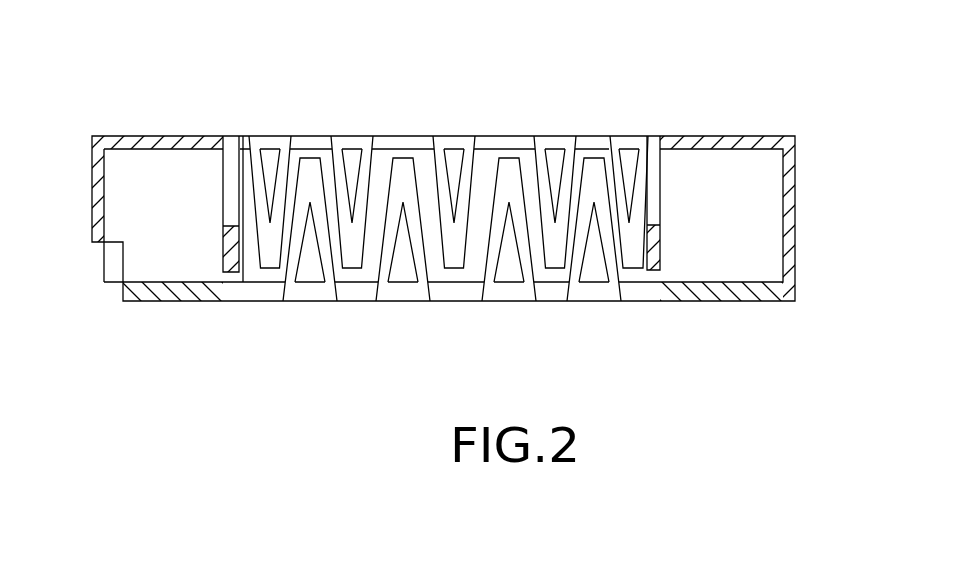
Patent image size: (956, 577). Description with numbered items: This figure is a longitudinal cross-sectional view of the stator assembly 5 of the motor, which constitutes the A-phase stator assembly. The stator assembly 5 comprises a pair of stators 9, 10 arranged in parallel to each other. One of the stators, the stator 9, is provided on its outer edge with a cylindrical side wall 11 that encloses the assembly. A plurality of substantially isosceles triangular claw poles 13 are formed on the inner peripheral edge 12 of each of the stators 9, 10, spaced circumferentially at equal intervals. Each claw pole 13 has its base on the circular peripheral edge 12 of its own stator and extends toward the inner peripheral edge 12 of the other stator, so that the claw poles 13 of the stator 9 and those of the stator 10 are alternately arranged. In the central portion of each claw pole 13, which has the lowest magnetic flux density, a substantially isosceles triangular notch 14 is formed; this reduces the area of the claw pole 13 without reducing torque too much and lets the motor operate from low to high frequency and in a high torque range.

The stator assembly 5 is at (715, 118).
The stator 9 is at (527, 140).
The stator 10 is at (357, 290).
The cylindrical side wall 11 is at (792, 210).
The inner peripheral edge 12 is at (653, 147).
The claw pole 13 is at (508, 173).
The notch 14 is at (232, 182).